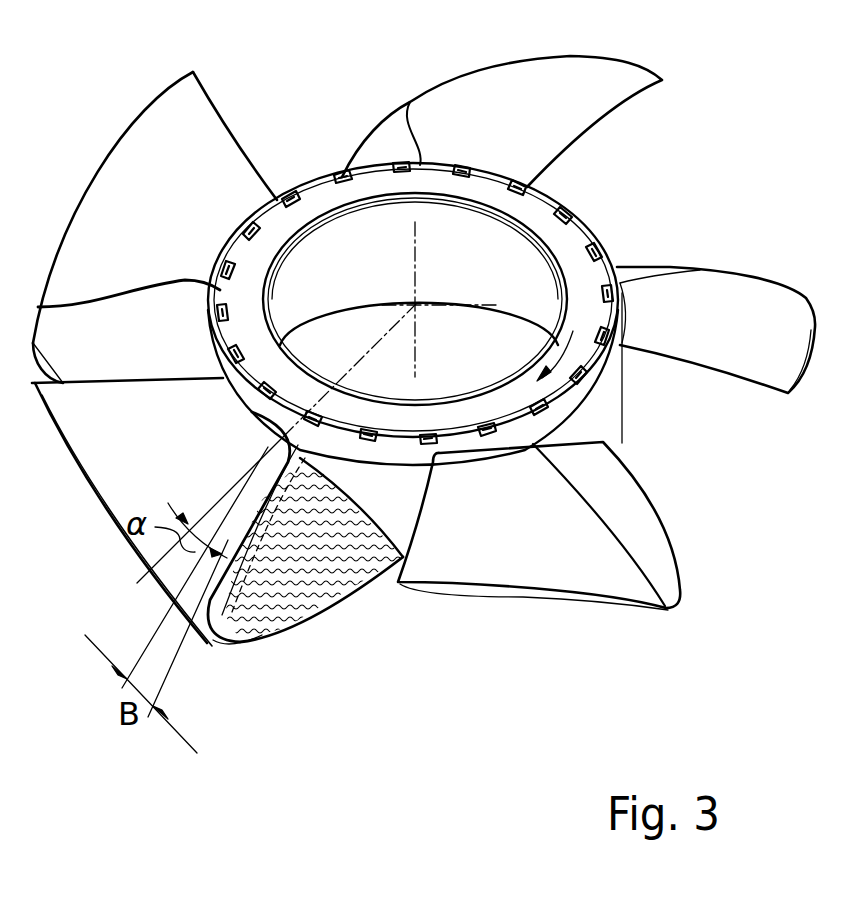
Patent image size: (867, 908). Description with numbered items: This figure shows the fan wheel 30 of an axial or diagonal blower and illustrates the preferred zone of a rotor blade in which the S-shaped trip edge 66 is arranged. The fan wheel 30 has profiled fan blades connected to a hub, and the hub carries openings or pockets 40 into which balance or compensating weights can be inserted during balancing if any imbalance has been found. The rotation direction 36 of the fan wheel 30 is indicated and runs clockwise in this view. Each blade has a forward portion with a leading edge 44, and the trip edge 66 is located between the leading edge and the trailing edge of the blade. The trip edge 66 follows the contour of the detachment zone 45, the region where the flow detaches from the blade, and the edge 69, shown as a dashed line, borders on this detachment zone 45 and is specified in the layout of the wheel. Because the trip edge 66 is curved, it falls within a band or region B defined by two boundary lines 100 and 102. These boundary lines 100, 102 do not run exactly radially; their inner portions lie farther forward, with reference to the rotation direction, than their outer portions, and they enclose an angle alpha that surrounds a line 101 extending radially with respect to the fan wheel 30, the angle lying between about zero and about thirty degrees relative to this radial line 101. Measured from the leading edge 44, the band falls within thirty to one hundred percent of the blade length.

The fan wheel 30 is at (365, 112).
The openings or pockets 40 is at (578, 212).
The rotation direction 36 is at (565, 338).
The leading edge 44 is at (113, 382).
The radial line 101 is at (372, 350).
The edge bordering the detachment zone 69 is at (245, 490).
The detachment zone 45 is at (313, 600).
The trip edge 66 is at (213, 640).
The boundary line 100 is at (150, 642).
The boundary line 102 is at (170, 668).